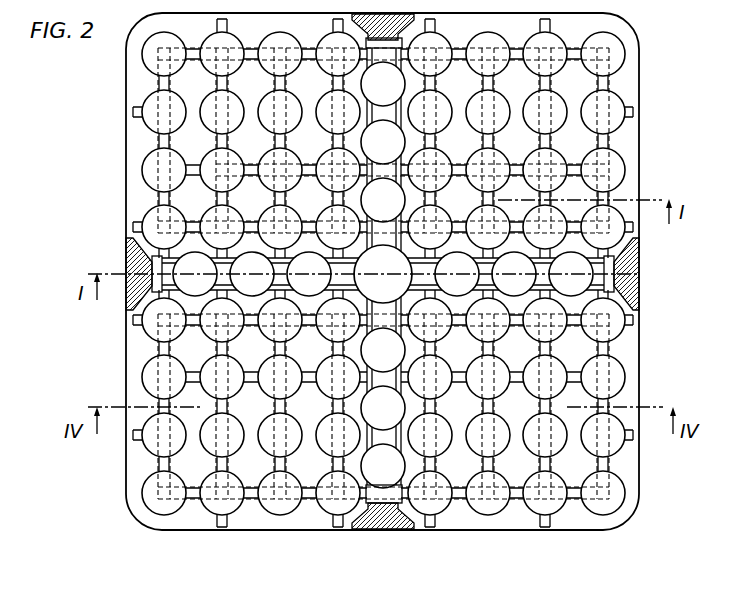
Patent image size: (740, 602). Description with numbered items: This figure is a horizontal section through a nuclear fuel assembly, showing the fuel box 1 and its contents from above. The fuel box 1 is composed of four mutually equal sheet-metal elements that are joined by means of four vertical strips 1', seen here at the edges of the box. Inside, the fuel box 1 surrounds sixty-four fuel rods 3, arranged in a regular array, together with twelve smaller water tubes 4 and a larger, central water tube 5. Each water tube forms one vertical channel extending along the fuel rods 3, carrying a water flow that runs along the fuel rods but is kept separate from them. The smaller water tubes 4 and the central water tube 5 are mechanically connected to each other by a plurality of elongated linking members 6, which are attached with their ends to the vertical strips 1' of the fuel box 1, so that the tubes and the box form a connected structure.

The fuel box 1 is at (396, 271).
The vertical strips 1' is at (375, 536).
The fuel rods 3 is at (553, 512).
The smaller water tubes 4 is at (522, 276).
The central water tube 5 is at (388, 293).
The linking members 6 is at (387, 513).